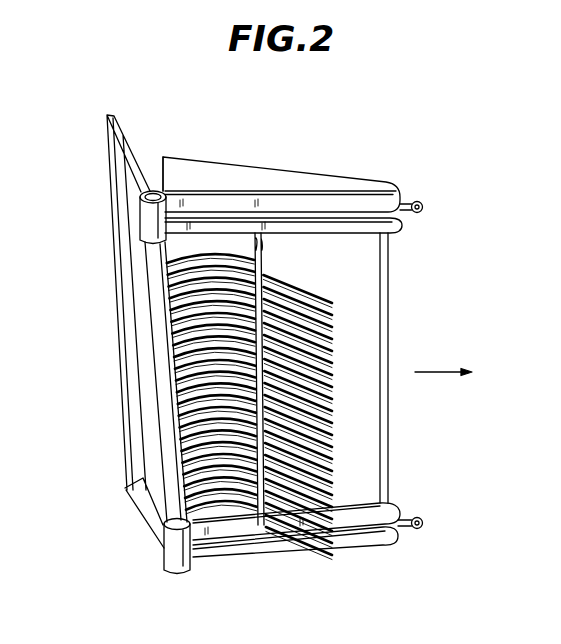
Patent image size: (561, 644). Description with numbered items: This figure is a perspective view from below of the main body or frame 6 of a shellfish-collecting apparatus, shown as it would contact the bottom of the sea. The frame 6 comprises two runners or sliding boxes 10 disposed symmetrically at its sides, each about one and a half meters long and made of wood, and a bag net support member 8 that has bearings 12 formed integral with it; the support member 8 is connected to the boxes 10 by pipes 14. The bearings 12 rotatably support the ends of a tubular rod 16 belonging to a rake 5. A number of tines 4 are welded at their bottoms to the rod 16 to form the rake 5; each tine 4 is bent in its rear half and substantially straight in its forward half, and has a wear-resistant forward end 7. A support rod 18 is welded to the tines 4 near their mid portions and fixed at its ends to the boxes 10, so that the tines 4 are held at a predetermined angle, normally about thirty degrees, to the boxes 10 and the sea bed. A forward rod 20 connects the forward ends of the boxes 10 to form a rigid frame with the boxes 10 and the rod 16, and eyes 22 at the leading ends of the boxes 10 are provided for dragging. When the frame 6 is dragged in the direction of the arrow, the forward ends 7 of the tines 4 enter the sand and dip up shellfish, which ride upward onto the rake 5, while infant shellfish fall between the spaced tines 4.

The tines 4 is at (312, 287).
The rake 5 is at (344, 398).
The main body or frame 6 is at (393, 342).
The forward ends 7 is at (332, 306).
The bag net support member 8 is at (107, 134).
The sliding boxes 10 is at (218, 174).
The bearings 12 is at (140, 229).
The pipes 14 is at (298, 216).
The rod 16 is at (160, 307).
The support rod 18 is at (260, 276).
The forward rod 20 is at (388, 472).
The eyes 22 is at (423, 207).